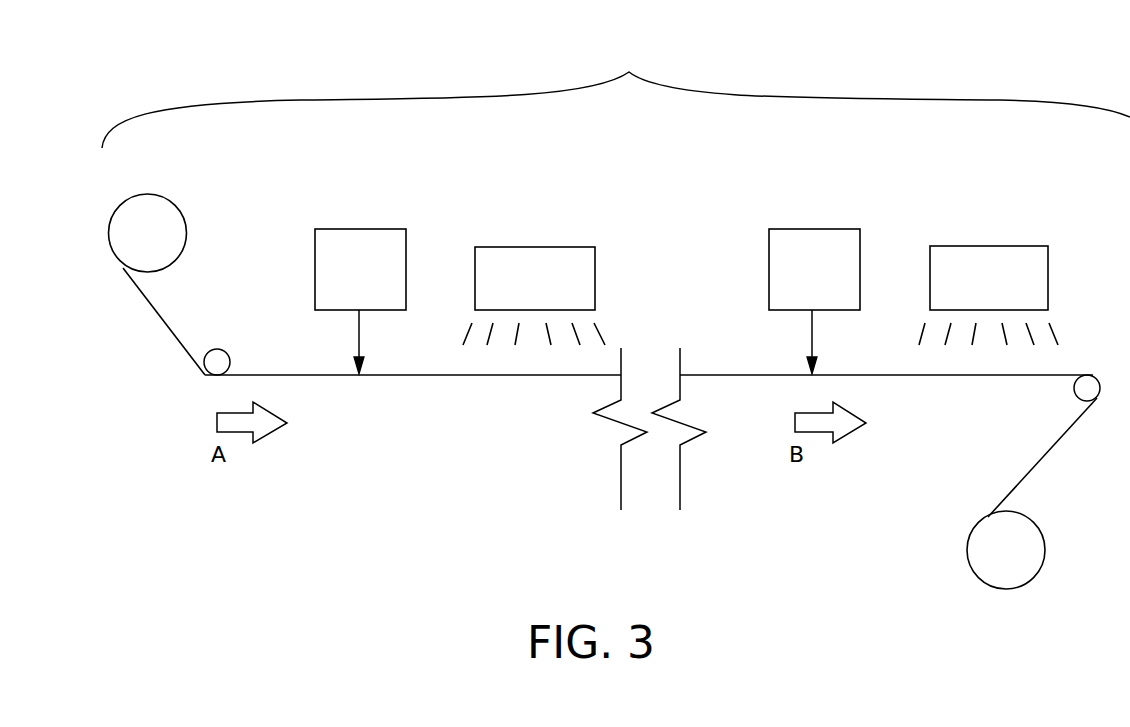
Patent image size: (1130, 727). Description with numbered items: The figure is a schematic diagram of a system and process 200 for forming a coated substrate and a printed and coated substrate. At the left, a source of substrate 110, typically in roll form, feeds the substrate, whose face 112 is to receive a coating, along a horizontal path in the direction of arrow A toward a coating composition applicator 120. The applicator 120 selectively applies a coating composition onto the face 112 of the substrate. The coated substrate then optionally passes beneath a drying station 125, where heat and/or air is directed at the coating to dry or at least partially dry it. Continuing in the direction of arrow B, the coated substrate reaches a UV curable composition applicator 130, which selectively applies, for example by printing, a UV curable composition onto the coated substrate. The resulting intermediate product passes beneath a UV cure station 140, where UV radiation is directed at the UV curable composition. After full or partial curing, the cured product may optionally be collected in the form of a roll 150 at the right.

The system and process 200 is at (616, 95).
The source of substrate 110 is at (165, 220).
The face 112 is at (165, 313).
The coating composition applicator 120 is at (395, 263).
The drying station 125 is at (562, 258).
The UV curable composition applicator 130 is at (817, 242).
The UV cure station 140 is at (1025, 257).
The roll 150 is at (983, 565).